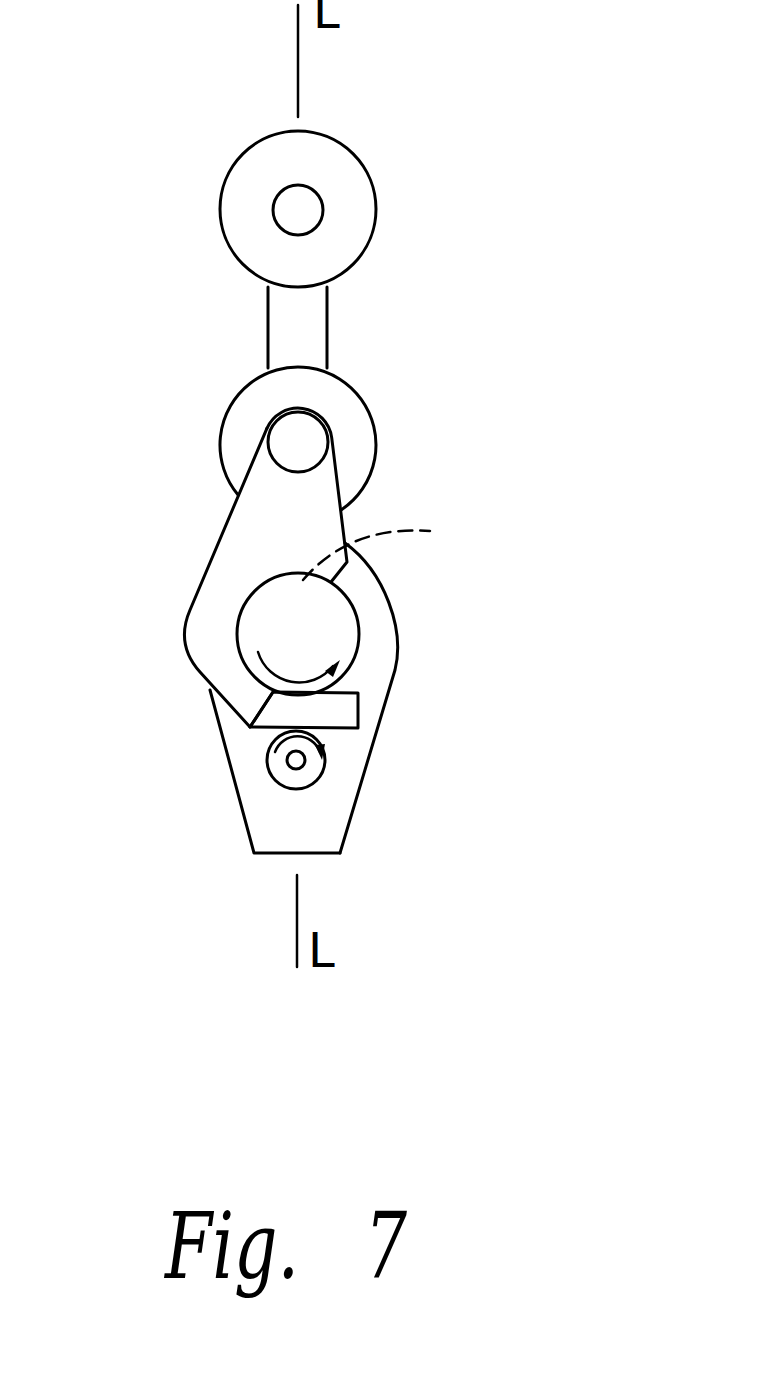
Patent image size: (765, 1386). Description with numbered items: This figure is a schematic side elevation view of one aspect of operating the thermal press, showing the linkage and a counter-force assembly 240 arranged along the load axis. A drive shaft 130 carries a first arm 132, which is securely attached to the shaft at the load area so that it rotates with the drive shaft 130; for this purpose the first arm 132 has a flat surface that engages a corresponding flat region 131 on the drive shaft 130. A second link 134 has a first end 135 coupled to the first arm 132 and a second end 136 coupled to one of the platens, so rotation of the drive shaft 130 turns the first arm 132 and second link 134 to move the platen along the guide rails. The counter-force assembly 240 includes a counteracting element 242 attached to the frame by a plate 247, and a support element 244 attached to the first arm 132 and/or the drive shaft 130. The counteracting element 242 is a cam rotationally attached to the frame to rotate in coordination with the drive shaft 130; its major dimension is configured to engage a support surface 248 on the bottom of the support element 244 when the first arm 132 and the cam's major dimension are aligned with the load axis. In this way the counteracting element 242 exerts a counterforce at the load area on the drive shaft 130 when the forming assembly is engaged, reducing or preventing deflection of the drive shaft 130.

The second end 136 is at (323, 212).
The second link 134 is at (268, 333).
The first end 135 is at (357, 435).
The first arm 132 is at (223, 565).
The drive shaft 130 is at (263, 633).
The flat region 131 is at (398, 543).
The plate 247 is at (381, 628).
The support element 244 is at (348, 713).
The counter-force assembly 240 is at (460, 724).
The counteracting element 242 is at (322, 760).
The support surface 248 is at (248, 728).